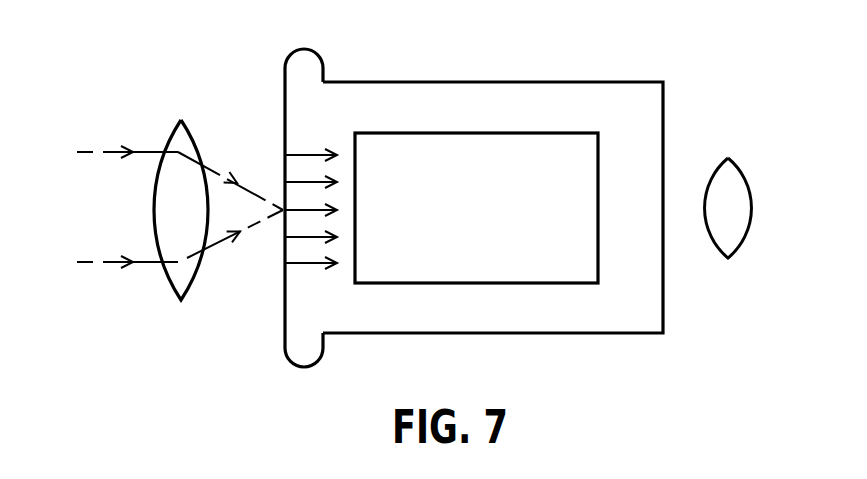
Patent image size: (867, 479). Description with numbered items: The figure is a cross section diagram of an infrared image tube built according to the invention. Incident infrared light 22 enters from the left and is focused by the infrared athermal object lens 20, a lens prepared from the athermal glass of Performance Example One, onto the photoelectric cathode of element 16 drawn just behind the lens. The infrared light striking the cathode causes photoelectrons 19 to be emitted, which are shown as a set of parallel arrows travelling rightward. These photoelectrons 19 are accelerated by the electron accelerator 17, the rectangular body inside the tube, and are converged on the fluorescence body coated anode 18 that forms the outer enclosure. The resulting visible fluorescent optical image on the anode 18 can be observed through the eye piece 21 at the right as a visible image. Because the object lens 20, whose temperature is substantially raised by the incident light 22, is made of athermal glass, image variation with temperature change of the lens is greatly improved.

The fiber optic faceplate 16 is at (285, 122).
The electron accelerator 17 is at (485, 132).
The fluorescence body coated anode 18 is at (663, 132).
The photoelectrons 19 is at (302, 153).
The object lens 20 is at (168, 285).
The eye piece 21 is at (745, 235).
The incident infrared light 22 is at (89, 151).